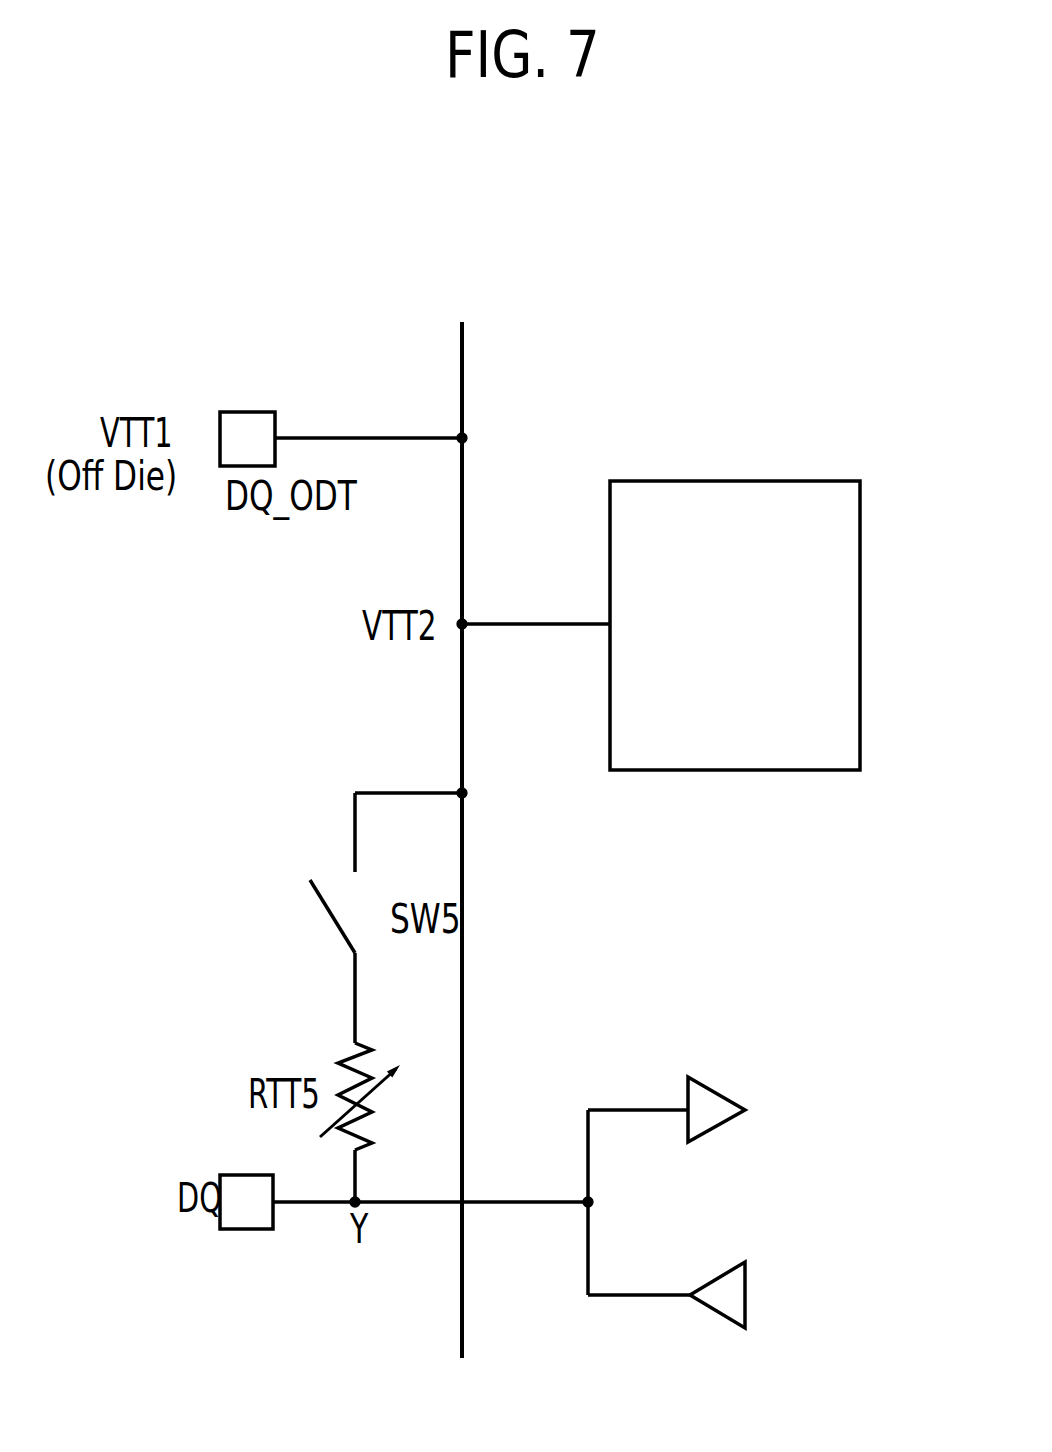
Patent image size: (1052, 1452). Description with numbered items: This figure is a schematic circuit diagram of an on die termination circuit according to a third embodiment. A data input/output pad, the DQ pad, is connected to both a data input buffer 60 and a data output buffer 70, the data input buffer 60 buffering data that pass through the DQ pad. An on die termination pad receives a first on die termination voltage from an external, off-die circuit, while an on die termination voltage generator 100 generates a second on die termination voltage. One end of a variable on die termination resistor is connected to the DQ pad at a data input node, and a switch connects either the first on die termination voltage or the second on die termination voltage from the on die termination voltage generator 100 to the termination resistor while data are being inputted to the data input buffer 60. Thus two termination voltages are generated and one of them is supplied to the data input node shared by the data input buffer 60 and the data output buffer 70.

The on die termination voltage generator 100 is at (847, 457).
The data input buffer 60 is at (716, 1093).
The data output buffer 70 is at (716, 1278).